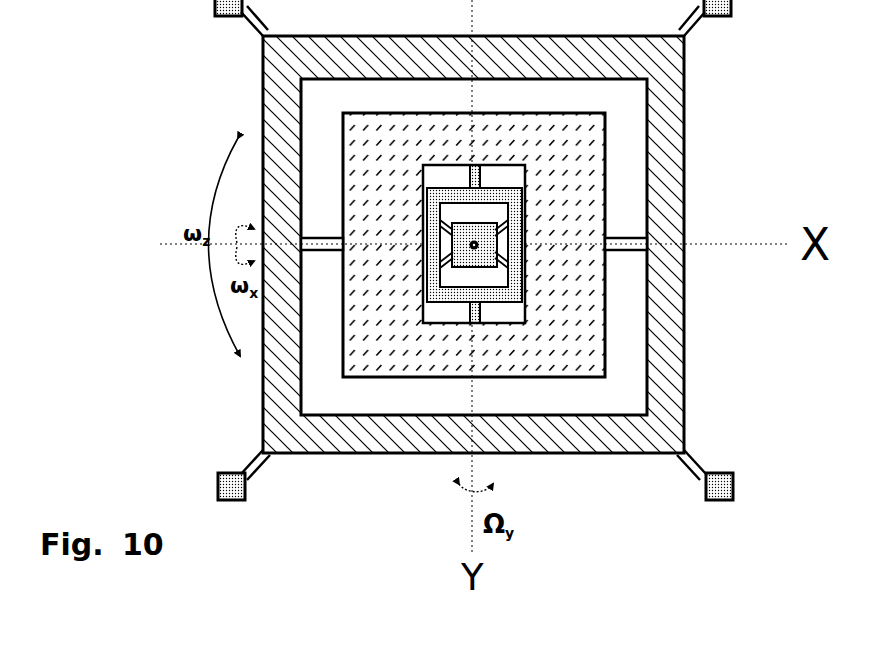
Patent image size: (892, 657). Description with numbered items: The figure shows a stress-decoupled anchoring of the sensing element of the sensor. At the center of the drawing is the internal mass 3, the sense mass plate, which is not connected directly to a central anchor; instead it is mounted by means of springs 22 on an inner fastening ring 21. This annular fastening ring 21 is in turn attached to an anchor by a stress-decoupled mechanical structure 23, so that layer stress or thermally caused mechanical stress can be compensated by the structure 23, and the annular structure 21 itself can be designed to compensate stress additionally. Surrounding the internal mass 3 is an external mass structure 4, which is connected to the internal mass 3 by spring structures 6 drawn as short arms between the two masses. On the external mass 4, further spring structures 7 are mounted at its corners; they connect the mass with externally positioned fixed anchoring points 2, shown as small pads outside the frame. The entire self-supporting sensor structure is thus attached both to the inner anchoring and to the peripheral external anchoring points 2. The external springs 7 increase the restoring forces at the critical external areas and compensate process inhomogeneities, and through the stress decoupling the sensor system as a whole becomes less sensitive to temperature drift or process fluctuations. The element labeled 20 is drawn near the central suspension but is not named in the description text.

The fixed anchoring point 2 is at (245, 495).
The internal mass 3 is at (605, 150).
The external mass structure 4 is at (686, 400).
The spring structure 6 is at (322, 252).
The spring structure 7 is at (258, 17).
The central suspension element 20 is at (490, 262).
The inner fastening ring 21 is at (440, 302).
The spring 22 is at (467, 303).
The stress-decoupled mechanical structure 23 is at (447, 214).